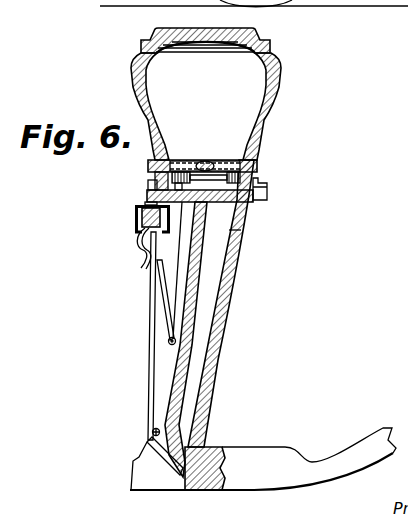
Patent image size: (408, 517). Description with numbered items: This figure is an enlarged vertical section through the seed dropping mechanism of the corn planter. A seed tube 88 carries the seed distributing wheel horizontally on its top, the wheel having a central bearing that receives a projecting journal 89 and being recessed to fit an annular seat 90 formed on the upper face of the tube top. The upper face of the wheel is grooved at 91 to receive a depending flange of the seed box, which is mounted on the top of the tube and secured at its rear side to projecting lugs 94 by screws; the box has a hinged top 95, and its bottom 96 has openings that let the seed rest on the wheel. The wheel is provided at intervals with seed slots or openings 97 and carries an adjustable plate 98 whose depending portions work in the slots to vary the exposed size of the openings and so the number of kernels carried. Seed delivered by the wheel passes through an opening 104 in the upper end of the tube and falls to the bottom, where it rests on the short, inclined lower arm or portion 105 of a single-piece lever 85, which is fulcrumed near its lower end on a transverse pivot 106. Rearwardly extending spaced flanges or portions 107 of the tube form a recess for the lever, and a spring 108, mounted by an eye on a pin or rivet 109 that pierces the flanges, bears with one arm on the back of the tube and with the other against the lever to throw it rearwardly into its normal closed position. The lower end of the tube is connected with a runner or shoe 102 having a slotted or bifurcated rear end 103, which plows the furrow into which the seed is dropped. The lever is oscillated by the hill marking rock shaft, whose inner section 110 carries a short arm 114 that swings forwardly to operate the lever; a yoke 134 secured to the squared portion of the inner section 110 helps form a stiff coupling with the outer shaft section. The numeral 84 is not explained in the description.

The block 84 is at (148, 187).
The lever 85 is at (150, 383).
The seed tube 88 is at (228, 280).
The projecting journal 89 is at (204, 204).
The annular seat 90 is at (240, 198).
The groove 91 is at (256, 178).
The projecting lugs 94 is at (266, 112).
The hinged top 95 is at (162, 31).
The bottom 96 is at (219, 160).
The seed slots or openings 97 is at (267, 191).
The adjustable plate 98 is at (188, 180).
The runner or shoe 102 is at (250, 456).
The slotted or bifurcated rear end 103 is at (163, 487).
The opening 104 is at (238, 233).
The lower arm or portion 105 is at (175, 468).
The transverse pivot 106 is at (152, 432).
The rearwardly extending spaced flanges 107 is at (140, 456).
The spring 108 is at (159, 292).
The pin or rivet 109 is at (168, 343).
The inner section 110 is at (142, 218).
The short arm 114 is at (142, 247).
The yoke 134 is at (134, 206).